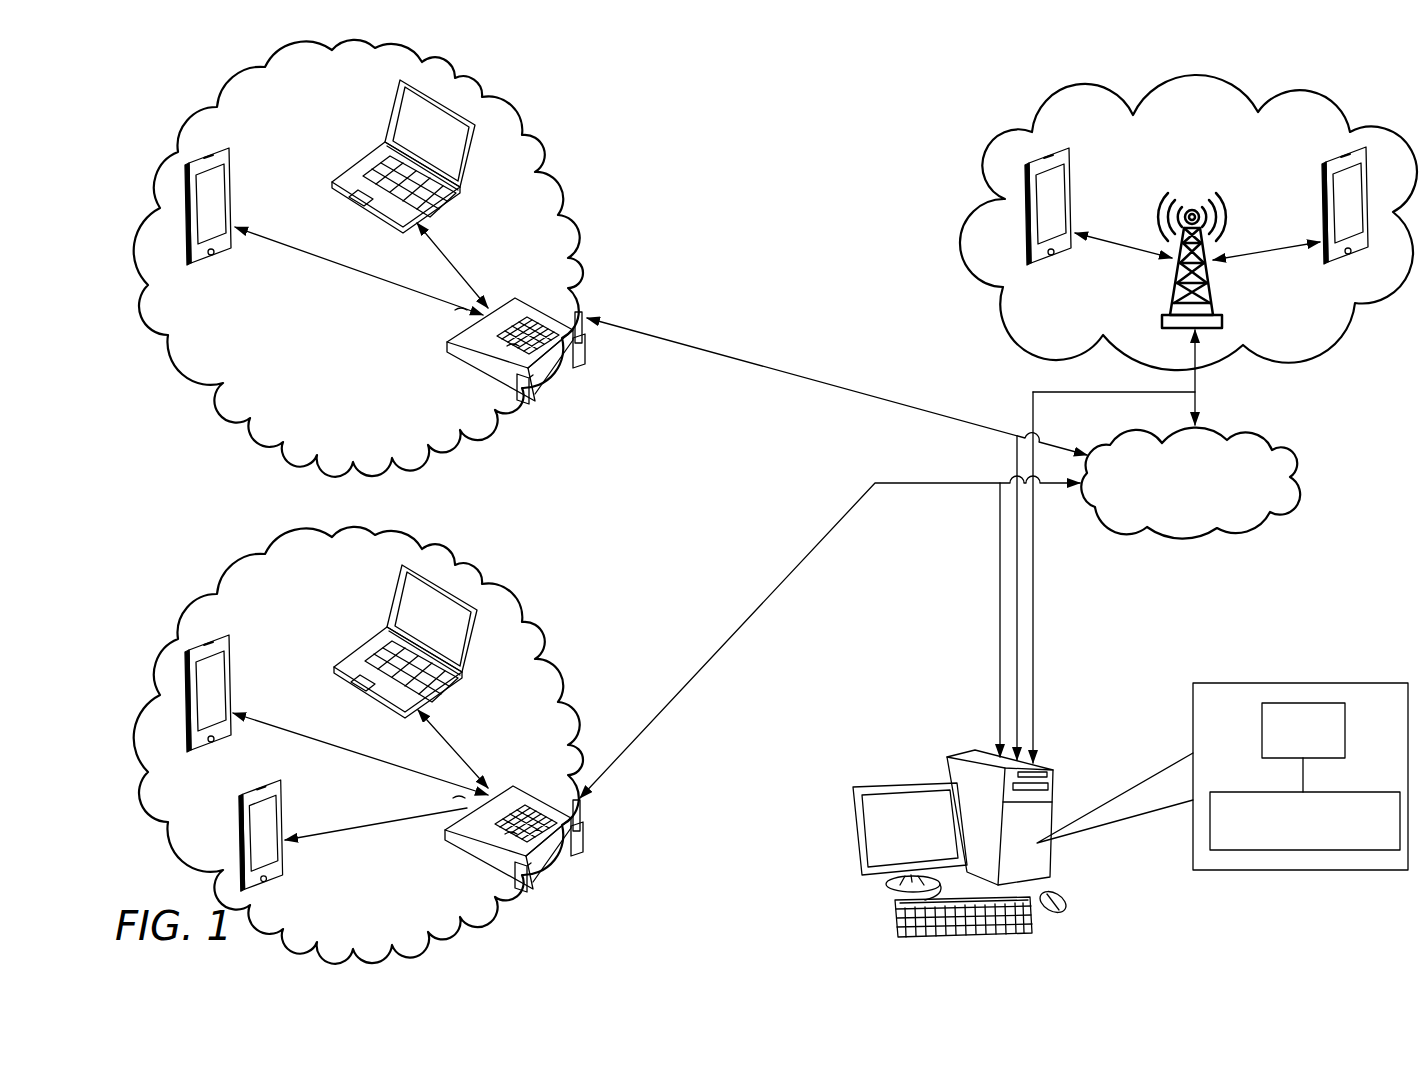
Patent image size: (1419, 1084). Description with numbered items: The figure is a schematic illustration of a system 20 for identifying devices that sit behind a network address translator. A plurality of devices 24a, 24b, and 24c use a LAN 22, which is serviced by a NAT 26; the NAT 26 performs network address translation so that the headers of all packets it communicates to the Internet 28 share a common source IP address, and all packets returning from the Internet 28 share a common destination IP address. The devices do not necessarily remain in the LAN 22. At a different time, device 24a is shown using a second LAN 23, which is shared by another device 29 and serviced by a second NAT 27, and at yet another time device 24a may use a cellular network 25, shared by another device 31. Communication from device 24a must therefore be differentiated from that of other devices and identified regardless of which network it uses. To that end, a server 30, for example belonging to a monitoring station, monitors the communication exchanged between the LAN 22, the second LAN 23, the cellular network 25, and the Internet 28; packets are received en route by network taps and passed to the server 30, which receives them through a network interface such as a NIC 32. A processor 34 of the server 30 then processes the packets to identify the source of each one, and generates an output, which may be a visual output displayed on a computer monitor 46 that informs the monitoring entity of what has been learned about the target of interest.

The system 20 is at (1222, 761).
The LAN 22 is at (180, 875).
The second LAN 23 is at (187, 390).
The device 24a is at (233, 158).
The device 24b is at (237, 826).
The device 24c is at (390, 592).
The cellular network 25 is at (965, 250).
The NAT 26 is at (466, 866).
The second NAT 27 is at (468, 378).
The Internet 28 is at (1188, 540).
The device 29 is at (397, 105).
The server 30 is at (965, 752).
The device 31 is at (1320, 170).
The NIC 32 is at (1303, 703).
The processor 34 is at (1303, 850).
The computer monitor 46 is at (912, 785).